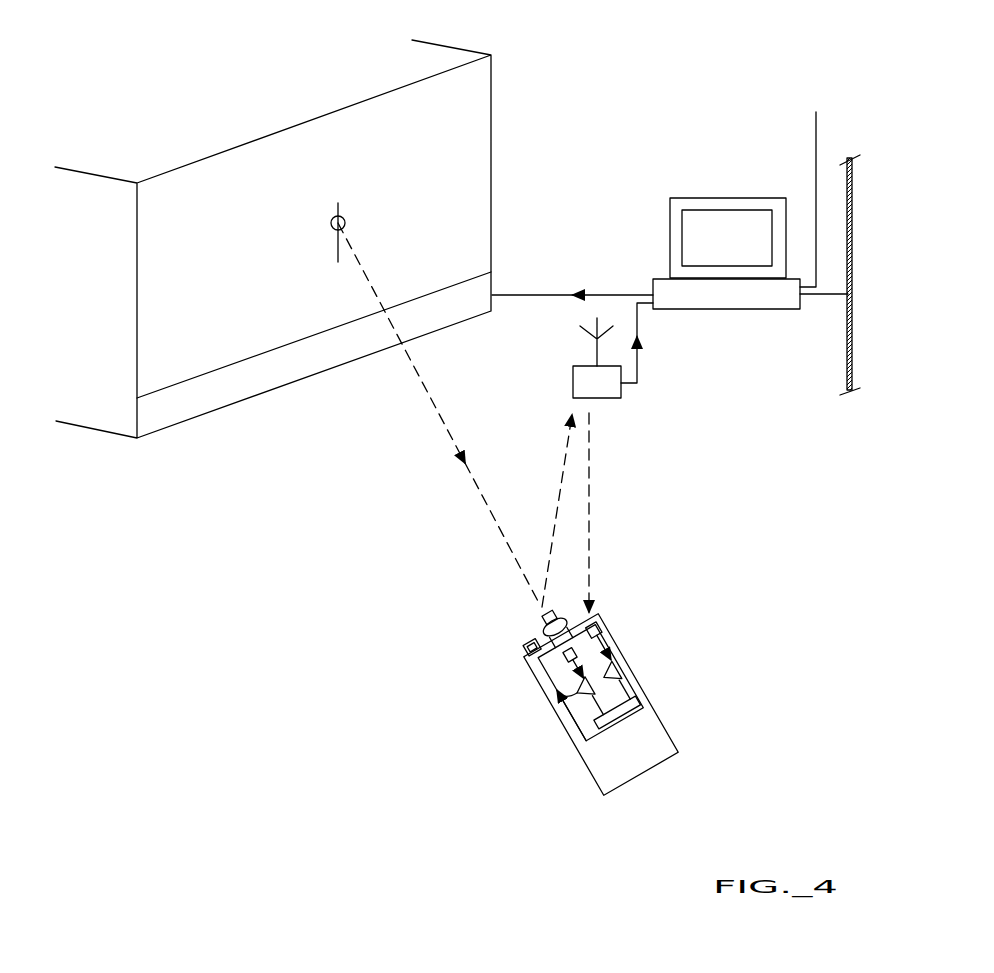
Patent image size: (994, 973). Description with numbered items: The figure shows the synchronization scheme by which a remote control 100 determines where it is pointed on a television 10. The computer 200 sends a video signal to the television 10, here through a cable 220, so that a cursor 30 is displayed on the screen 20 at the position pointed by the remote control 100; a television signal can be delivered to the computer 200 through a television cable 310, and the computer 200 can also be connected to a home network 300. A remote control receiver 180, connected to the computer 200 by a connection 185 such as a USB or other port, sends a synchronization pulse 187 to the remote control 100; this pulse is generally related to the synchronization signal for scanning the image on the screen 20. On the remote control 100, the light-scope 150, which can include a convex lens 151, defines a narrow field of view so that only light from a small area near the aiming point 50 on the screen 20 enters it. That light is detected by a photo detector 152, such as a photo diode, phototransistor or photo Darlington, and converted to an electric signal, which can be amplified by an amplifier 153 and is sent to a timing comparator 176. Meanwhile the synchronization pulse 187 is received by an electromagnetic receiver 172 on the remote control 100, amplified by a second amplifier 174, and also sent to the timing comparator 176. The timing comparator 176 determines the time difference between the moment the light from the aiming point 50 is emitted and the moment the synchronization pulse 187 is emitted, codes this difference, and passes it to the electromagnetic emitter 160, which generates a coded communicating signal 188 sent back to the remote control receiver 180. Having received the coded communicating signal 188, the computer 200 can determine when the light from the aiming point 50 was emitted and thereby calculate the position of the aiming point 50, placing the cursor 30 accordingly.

The television 10 is at (462, 47).
The screen 20 is at (148, 200).
The cursor 30 is at (322, 230).
The aiming point 50 is at (344, 220).
The remote control 100 is at (443, 757).
The light-scope 150 is at (540, 622).
The convex lens 151 is at (555, 607).
The photo detector 152 is at (565, 663).
The amplifier 153 is at (585, 688).
The electromagnetic emitter 160 is at (527, 650).
The electromagnetic receiver 172 is at (597, 625).
The amplifier 174 is at (620, 667).
The timing comparator 176 is at (643, 700).
The remote control receiver 180 is at (573, 383).
The cable 185 is at (640, 363).
The synchronization pulse 187 is at (590, 497).
The coded communicating signal 188 is at (562, 478).
The computer 200 is at (647, 283).
The cable 220 is at (543, 292).
The home network 300 is at (848, 350).
The television cable 310 is at (817, 213).